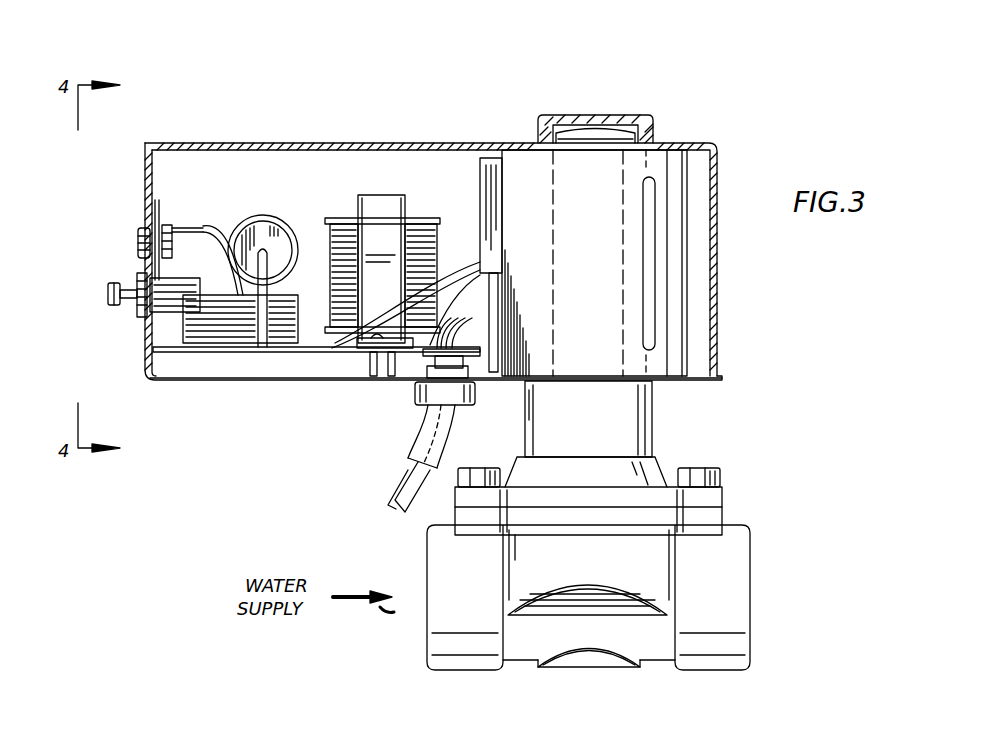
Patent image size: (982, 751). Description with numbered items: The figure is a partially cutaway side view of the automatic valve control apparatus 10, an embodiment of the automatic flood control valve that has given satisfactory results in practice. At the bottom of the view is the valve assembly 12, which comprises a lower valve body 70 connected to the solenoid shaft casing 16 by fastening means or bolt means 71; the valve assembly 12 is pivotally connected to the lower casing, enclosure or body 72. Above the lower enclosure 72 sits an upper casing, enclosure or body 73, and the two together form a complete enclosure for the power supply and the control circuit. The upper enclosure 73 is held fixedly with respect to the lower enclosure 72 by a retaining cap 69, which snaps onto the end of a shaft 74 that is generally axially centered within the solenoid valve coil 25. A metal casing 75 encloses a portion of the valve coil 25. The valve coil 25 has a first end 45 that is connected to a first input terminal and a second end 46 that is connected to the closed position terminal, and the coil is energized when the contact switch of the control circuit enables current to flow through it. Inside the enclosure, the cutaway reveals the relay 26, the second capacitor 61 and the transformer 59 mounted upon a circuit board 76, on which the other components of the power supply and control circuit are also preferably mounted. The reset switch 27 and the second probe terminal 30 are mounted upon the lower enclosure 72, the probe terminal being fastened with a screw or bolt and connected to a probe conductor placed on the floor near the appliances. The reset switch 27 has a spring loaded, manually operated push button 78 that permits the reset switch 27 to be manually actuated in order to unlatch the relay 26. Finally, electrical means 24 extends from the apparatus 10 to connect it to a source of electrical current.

The automatic valve control apparatus 10 is at (305, 112).
The valve assembly 12 is at (730, 582).
The solenoid shaft casing 16 is at (635, 422).
The electrical means 24 is at (423, 435).
The solenoid valve coil 25 is at (477, 178).
The relay 26 is at (208, 343).
The reset switch 27 is at (168, 302).
The second probe terminal 30 is at (138, 230).
The first end of valve coil 45 is at (418, 352).
The second end of valve coil 46 is at (345, 348).
The transformer 59 is at (424, 221).
The second capacitor 61 is at (257, 230).
The retaining cap 69 is at (653, 124).
The lower valve body 70 is at (659, 650).
The bolt means 71 is at (705, 467).
The lower enclosure 72 is at (690, 382).
The upper enclosure 73 is at (712, 183).
The shaft 74 is at (577, 283).
The metal casing 75 is at (672, 285).
The circuit board 76 is at (287, 353).
The push button 78 is at (108, 297).